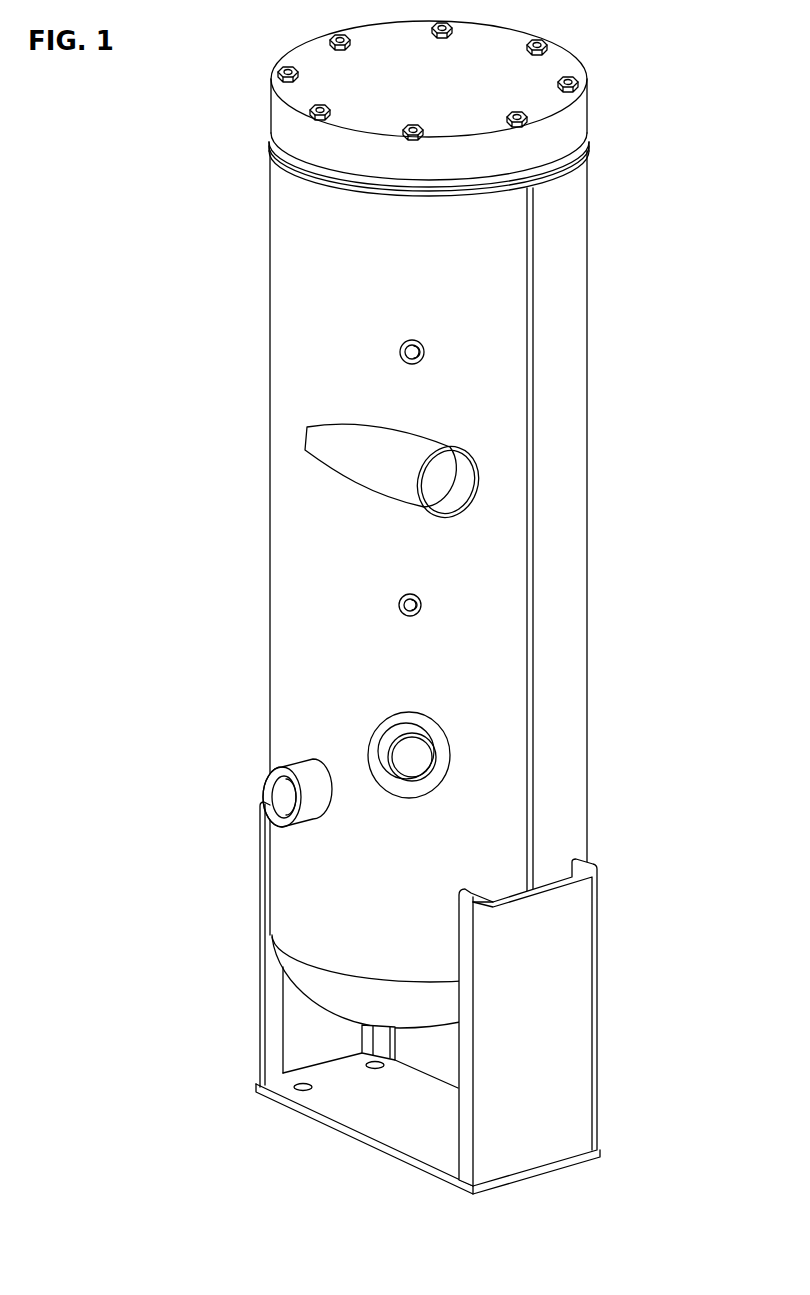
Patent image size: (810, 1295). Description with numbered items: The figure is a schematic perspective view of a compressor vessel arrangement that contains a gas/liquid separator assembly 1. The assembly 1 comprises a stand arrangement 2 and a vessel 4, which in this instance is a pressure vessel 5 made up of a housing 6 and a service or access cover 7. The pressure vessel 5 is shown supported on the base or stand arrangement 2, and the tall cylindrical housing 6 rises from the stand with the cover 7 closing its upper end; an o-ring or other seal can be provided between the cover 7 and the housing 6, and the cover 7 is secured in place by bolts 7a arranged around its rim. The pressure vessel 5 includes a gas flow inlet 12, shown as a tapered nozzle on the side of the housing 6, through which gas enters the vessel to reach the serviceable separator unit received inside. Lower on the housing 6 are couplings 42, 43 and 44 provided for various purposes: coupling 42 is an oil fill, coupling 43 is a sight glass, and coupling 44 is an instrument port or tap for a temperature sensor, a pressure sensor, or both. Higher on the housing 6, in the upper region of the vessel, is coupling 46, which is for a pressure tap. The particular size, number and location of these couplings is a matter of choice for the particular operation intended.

The gas/liquid separator assembly 1 is at (450, 514).
The stand arrangement 2 is at (582, 905).
The vessel 4 is at (575, 447).
The pressure vessel 5 is at (573, 397).
The housing 6 is at (577, 237).
The service or access cover 7 is at (541, 72).
The bolts 7a is at (288, 64).
The gas flow inlet 12 is at (419, 442).
The coupling 42 is at (419, 788).
The coupling 43 is at (297, 765).
The coupling 44 is at (411, 594).
The coupling 46 is at (414, 343).